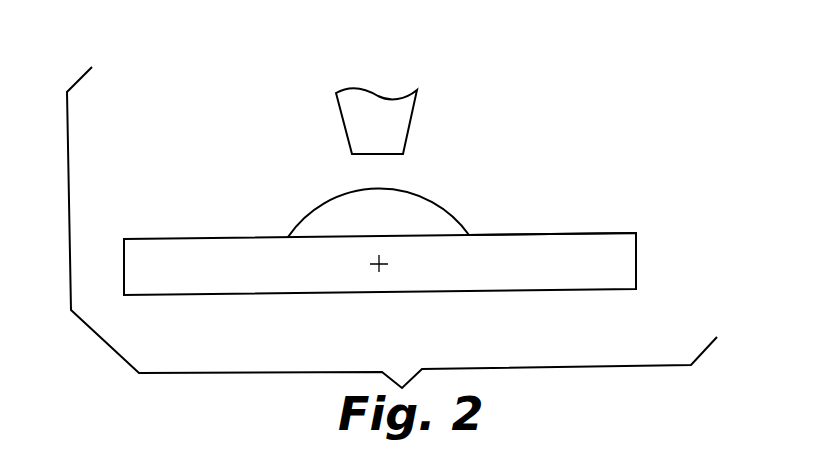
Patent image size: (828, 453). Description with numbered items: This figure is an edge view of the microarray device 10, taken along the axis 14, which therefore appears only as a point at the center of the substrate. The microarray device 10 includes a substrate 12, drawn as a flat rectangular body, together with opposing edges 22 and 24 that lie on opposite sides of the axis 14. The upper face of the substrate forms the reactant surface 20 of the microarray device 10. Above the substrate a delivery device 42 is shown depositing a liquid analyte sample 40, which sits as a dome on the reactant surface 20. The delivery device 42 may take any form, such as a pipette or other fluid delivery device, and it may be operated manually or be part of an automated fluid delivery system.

The microarray device 10 is at (237, 204).
The substrate 12 is at (625, 258).
The axis 14 is at (380, 267).
The reactant surface 20 is at (522, 232).
The edge 22 is at (615, 232).
The edge 24 is at (142, 238).
The liquid analyte sample 40 is at (422, 203).
The delivery device 42 is at (368, 100).